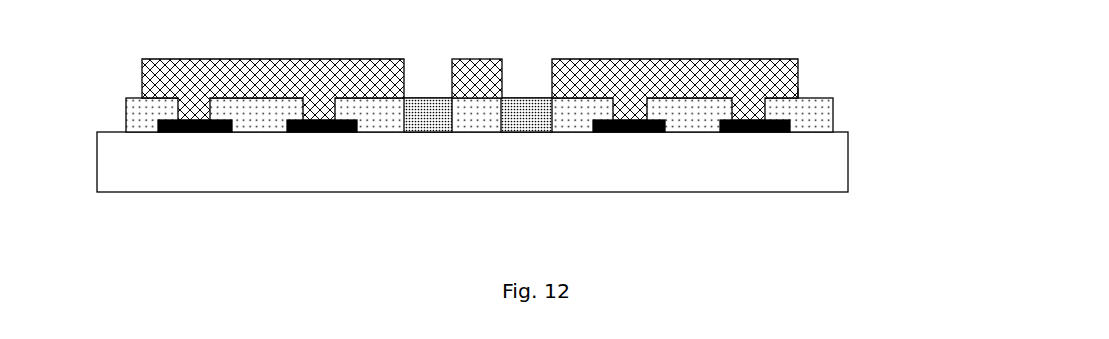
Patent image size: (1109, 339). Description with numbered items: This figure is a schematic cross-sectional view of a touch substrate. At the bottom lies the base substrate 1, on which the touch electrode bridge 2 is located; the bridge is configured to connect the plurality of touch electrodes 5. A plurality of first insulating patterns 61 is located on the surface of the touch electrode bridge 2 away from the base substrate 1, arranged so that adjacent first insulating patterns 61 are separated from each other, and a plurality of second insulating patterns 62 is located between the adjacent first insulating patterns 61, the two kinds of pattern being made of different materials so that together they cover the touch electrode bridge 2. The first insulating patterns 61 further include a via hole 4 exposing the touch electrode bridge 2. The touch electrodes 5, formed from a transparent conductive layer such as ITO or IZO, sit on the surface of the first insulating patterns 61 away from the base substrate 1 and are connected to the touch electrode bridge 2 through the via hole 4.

The base substrate 1 is at (848, 162).
The touch electrode bridge 2 is at (833, 118).
The via hole 4 is at (637, 122).
The touch electrode 5 is at (780, 60).
The first insulating pattern 61 is at (800, 96).
The second insulating pattern 62 is at (528, 118).